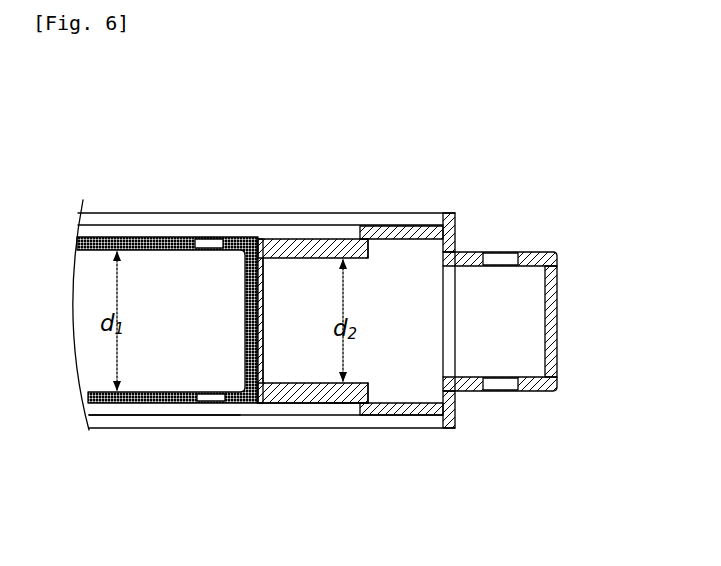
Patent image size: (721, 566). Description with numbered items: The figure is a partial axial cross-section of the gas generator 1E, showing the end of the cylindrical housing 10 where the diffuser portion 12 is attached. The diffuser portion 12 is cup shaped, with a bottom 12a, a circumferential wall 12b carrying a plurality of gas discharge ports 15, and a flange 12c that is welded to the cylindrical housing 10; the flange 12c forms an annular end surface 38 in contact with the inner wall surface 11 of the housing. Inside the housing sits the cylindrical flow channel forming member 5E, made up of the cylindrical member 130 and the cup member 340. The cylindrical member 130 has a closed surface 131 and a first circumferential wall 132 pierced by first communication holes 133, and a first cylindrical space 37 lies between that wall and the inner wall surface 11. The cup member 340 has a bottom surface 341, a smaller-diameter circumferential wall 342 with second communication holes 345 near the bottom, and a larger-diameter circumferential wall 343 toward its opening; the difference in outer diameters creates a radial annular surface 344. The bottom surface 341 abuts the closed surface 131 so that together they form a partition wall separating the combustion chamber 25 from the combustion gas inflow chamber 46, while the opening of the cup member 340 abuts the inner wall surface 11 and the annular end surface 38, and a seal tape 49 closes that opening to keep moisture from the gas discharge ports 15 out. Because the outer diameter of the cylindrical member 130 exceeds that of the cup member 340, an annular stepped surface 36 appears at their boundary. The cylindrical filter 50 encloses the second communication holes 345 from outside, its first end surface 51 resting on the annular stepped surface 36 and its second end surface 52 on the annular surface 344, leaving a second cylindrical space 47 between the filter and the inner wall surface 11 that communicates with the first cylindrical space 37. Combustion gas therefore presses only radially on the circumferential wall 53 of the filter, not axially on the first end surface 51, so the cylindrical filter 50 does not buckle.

The cylindrical housing 10 is at (333, 212).
The inner wall surface 11 is at (191, 213).
The diffuser portion 12 is at (542, 311).
The bottom 12a is at (560, 340).
The circumferential wall 12b is at (542, 250).
The flange 12c is at (458, 236).
The gas discharge ports 15 is at (500, 388).
The combustion chamber (first chamber) 25 is at (214, 301).
The annular stepped surface 36 is at (303, 339).
The first cylindrical space 37 is at (196, 406).
The annular end surface 38 is at (415, 323).
The combustion gas inflow chamber (second chamber) 46 is at (406, 369).
The second cylindrical space 47 is at (283, 407).
The seal tape 49 is at (447, 304).
The cylindrical filter 50 is at (342, 229).
The first end surface 51 is at (237, 252).
The second end surface 52 is at (371, 250).
The circumferential wall 53 is at (307, 404).
The cylindrical member 130 is at (168, 312).
The closed surface 131 is at (167, 357).
The circumferential wall (first circumferential wall) 132 is at (235, 405).
The first communication holes 133 is at (210, 390).
The cup member 340 is at (281, 237).
The bottom surface 341 is at (265, 308).
The smaller-diameter circumferential wall 342 is at (333, 403).
The larger-diameter circumferential wall 343 is at (408, 417).
The annular surface 344 is at (353, 417).
The second communication holes 345 is at (312, 383).
The gas generator 1E is at (357, 178).
The cylindrical flow channel forming member 5E is at (222, 138).